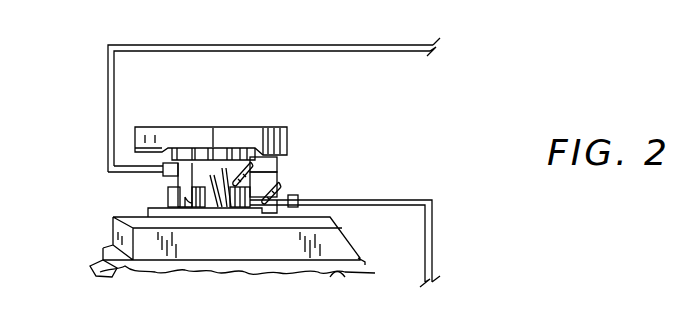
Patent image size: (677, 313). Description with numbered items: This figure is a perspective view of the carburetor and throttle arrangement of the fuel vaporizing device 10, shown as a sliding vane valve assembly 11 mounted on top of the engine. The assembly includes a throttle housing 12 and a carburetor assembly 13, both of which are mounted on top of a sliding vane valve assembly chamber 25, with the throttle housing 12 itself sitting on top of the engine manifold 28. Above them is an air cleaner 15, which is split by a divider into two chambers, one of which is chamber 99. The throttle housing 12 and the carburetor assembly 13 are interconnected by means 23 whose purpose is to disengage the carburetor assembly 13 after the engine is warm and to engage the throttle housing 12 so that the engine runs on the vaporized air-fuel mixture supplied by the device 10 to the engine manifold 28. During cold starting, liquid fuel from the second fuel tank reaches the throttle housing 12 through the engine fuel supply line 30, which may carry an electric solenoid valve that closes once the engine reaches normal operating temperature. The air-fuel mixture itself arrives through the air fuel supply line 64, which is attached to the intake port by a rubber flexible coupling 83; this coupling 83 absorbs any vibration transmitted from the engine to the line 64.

The device 10 is at (617, 312).
The sliding vane valve assembly 11 is at (294, 174).
The throttle housing 12 is at (281, 164).
The carburetor assembly 13 is at (161, 186).
The air cleaner 15 is at (235, 125).
The means for disengaging the carburetor and engaging the throttle housing 23 is at (206, 155).
The sliding vane valve assembly chamber 25 is at (280, 217).
The engine manifold 28 is at (337, 238).
The engine fuel supply line 30 is at (383, 52).
The air fuel supply line 64 is at (433, 242).
The rubber flexible coupling 83 is at (298, 197).
The chamber 99 is at (281, 133).